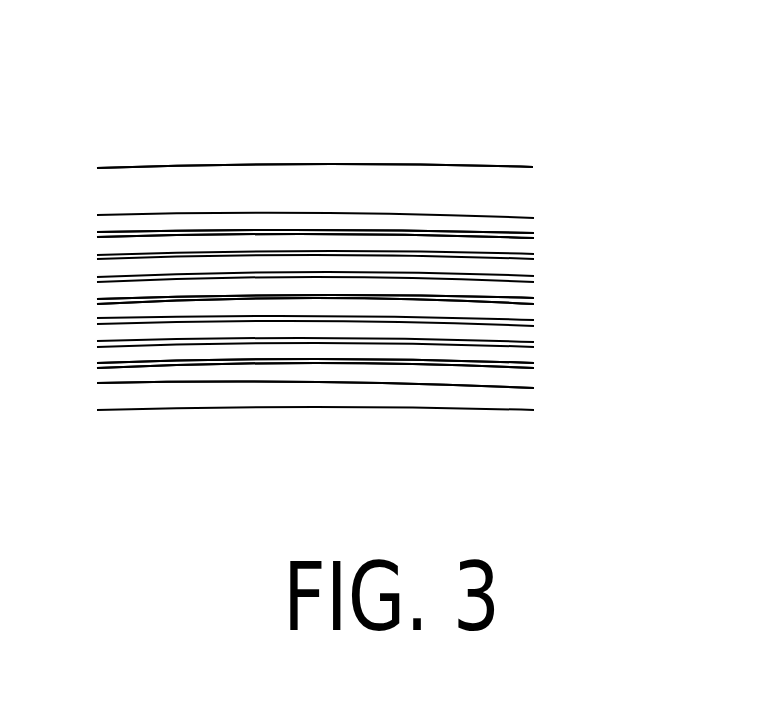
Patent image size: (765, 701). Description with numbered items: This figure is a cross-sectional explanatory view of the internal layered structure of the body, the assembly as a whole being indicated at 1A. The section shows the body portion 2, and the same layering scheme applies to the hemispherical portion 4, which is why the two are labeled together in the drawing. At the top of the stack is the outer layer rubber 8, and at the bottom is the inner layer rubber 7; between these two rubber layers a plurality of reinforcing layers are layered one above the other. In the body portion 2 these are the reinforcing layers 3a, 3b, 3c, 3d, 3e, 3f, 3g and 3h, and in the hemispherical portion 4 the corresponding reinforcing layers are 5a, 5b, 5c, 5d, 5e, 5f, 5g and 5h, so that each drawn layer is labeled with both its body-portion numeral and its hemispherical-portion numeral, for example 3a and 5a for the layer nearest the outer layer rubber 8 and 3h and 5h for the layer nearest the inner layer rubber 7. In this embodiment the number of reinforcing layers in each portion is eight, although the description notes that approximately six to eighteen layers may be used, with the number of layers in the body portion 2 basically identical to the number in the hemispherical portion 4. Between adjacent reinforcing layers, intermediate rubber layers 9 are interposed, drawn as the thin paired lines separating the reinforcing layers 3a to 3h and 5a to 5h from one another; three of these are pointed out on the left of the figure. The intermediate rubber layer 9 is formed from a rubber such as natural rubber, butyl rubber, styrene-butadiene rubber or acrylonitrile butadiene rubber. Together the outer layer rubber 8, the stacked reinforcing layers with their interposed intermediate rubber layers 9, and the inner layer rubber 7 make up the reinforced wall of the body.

The laminated body 1A is at (423, 129).
The body portion 2 is at (315, 116).
The hemispherical portion 4 is at (190, 173).
The outer layer rubber 8 is at (308, 175).
The reinforcing layer 3a is at (357, 166).
The reinforcing layer 5a is at (498, 231).
The reinforcing layer 3b is at (381, 196).
The reinforcing layer 5b is at (509, 250).
The reinforcing layer 3c is at (390, 235).
The reinforcing layer 5c is at (510, 268).
The reinforcing layer 3d is at (411, 269).
The reinforcing layer 5d is at (513, 292).
The reinforcing layer 3e is at (401, 306).
The reinforcing layer 5e is at (522, 312).
The reinforcing layer 3f is at (411, 351).
The reinforcing layer 5f is at (527, 335).
The reinforcing layer 3g is at (399, 385).
The reinforcing layer 5g is at (527, 358).
The reinforcing layer 3h is at (368, 421).
The reinforcing layer 5h is at (502, 375).
The intermediate rubber layer 9 is at (117, 233).
The inner layer rubber 7 is at (345, 397).